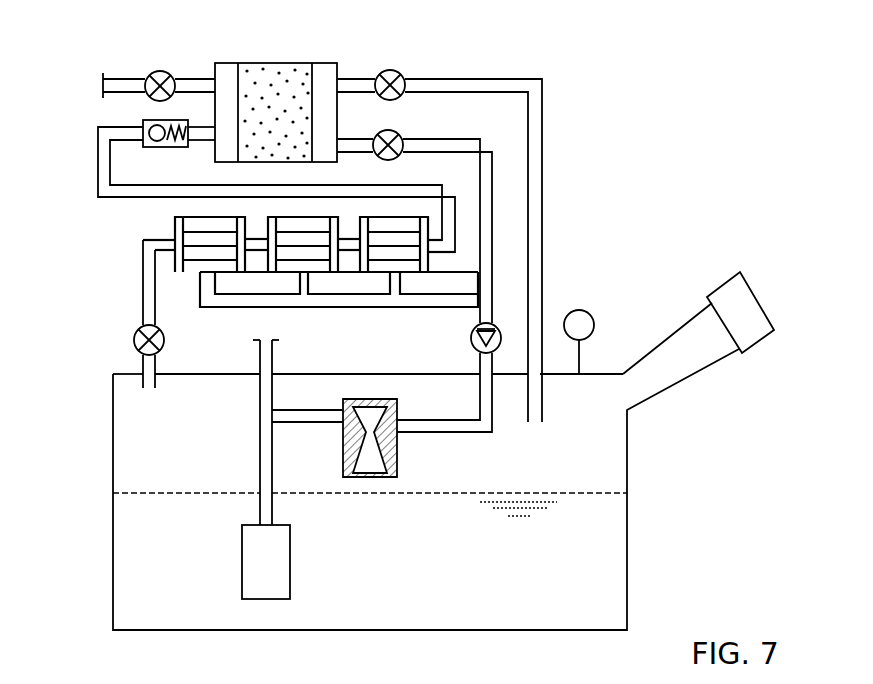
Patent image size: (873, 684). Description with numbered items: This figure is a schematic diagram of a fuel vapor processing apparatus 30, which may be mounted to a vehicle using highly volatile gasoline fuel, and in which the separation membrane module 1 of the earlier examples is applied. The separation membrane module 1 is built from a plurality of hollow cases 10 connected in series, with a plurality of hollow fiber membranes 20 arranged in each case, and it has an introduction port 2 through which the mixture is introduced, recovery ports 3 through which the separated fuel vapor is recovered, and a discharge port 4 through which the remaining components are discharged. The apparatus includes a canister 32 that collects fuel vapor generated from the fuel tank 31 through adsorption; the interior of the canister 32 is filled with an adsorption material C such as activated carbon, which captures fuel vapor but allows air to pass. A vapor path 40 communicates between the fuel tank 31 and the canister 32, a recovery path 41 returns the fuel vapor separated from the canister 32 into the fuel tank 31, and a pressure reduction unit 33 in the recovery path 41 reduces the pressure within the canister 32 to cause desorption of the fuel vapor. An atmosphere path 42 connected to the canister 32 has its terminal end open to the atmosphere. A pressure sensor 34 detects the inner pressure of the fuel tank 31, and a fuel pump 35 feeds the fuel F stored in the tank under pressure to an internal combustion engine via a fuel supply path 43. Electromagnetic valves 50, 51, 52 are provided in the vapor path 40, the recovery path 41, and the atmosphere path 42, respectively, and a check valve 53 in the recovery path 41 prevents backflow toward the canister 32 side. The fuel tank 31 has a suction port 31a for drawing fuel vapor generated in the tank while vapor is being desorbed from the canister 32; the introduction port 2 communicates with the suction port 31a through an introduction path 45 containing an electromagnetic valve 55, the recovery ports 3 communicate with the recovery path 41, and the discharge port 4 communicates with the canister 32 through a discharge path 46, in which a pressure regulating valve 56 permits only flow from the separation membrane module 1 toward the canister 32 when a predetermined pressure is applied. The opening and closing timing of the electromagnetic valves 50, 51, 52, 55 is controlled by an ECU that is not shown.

The separation membrane module 1 is at (146, 221).
The introduction port 2 is at (158, 252).
The recovery ports 3 is at (216, 284).
The discharge port 4 is at (440, 260).
The hollow case 10 is at (183, 276).
The hollow fiber membranes 20 is at (332, 290).
The fuel vapor processing apparatus 30 is at (648, 152).
The fuel tank 31 is at (600, 452).
The suction port 31a is at (148, 388).
The canister 32 is at (230, 72).
The pressure reduction unit 33 is at (368, 468).
The pressure sensor 34 is at (593, 318).
The fuel pump 35 is at (243, 562).
The vapor path 40 is at (541, 215).
The recovery path 41 is at (446, 433).
The atmosphere path 42 is at (118, 78).
The fuel supply path 43 is at (260, 455).
The introduction path 45 is at (145, 310).
The discharge path 46 is at (100, 186).
The electromagnetic valve 50 is at (392, 70).
The electromagnetic valve 51 is at (402, 132).
The electromagnetic valve 52 is at (163, 70).
The check valve 53 is at (493, 328).
The electromagnetic valve 55 is at (165, 343).
The pressure regulating valve 56 is at (143, 122).
The adsorption material C is at (285, 70).
The fuel F is at (590, 553).